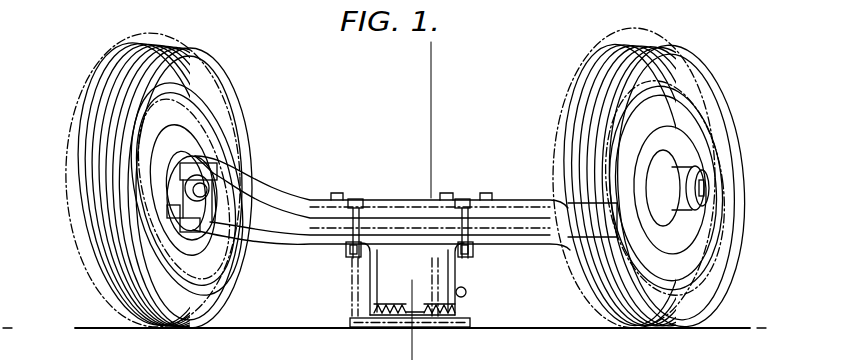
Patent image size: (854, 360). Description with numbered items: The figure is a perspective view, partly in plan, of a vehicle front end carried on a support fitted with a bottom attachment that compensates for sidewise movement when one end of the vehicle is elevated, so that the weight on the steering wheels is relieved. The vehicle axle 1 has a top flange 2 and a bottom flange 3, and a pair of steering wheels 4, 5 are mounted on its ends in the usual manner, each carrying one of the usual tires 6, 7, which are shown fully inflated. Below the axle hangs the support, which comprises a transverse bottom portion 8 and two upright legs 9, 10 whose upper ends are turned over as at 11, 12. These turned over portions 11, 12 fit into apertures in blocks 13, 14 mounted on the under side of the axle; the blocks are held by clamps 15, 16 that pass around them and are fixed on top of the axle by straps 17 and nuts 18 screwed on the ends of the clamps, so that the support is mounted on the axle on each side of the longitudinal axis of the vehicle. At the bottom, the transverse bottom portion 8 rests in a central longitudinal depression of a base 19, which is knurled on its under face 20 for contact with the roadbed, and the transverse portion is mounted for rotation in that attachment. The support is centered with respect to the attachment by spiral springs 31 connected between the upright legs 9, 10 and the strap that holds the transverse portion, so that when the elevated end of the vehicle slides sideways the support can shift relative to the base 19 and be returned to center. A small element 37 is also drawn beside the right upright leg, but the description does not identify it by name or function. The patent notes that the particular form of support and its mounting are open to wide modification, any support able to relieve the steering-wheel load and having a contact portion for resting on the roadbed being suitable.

The vehicle axle 1 is at (262, 210).
The top flange 2 is at (438, 63).
The bottom flange 3 is at (505, 245).
The steering wheel 4 is at (216, 118).
The steering wheel 5 is at (712, 128).
The tire 6 is at (192, 52).
The tire 7 is at (704, 82).
The transverse bottom portion 8 is at (392, 308).
The upright leg 9 is at (377, 270).
The upright leg 10 is at (452, 277).
The turned over portion 11 is at (346, 250).
The turned over portion 12 is at (472, 250).
The block 13 is at (352, 258).
The block 14 is at (473, 262).
The clamp 15 is at (370, 213).
The clamp 16 is at (478, 200).
The strap 17 is at (362, 204).
The nut 18 is at (356, 198).
The base 19 is at (352, 326).
The under face 20 is at (403, 322).
The spiral spring 31 is at (390, 316).
The adjusting knob 37 is at (450, 302).